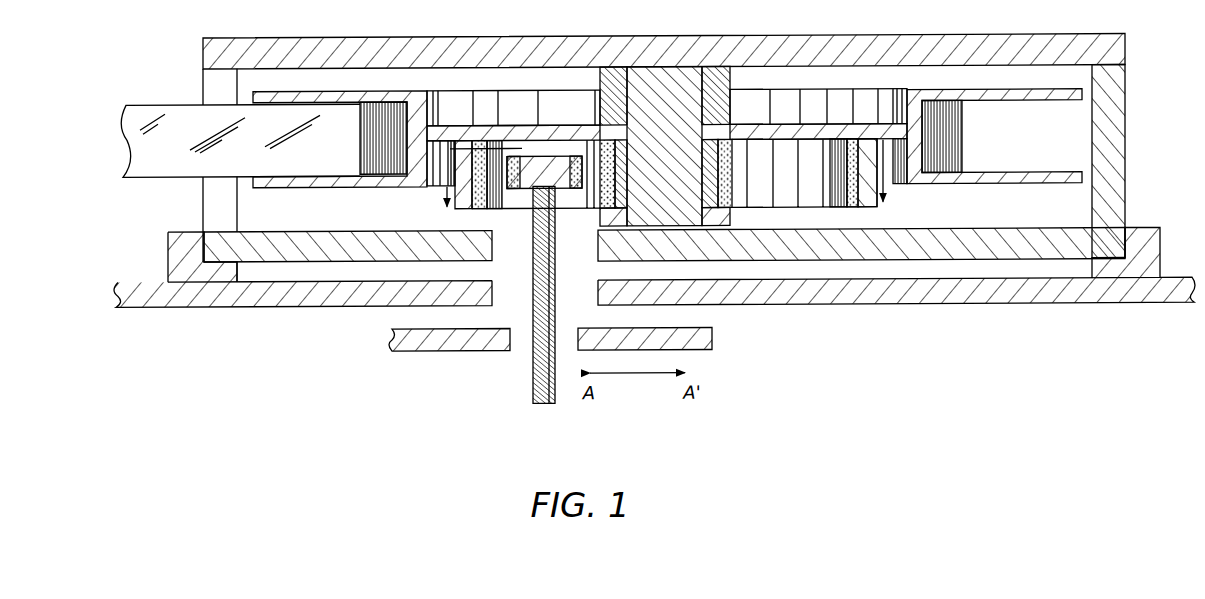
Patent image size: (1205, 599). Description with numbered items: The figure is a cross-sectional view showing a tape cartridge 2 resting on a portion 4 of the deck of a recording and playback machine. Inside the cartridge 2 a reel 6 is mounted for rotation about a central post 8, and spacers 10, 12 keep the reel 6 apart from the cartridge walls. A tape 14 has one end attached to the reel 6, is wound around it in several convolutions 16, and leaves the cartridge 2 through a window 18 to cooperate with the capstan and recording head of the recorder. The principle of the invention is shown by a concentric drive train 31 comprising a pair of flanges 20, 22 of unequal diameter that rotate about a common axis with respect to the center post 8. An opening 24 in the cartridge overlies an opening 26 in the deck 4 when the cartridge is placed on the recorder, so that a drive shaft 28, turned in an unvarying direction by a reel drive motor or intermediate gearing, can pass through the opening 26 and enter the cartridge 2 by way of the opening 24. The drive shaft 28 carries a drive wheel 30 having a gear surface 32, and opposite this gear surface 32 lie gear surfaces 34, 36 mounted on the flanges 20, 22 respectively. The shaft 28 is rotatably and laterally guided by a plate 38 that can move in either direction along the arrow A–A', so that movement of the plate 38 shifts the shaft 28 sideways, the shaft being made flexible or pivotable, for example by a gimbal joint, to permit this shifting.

The cartridge 2 is at (1127, 52).
The portion of the deck 4 is at (1080, 297).
The reel 6 is at (422, 113).
The central post 8 is at (708, 74).
The spacer 10 is at (603, 85).
The spacer 12 is at (723, 217).
The tape 14 is at (145, 162).
The convolutions 16 is at (379, 177).
The window 18 is at (208, 83).
The flange 20 is at (618, 148).
The flange 22 is at (457, 214).
The opening 24 is at (492, 257).
The opening 26 is at (490, 296).
The drive shaft 28 is at (560, 278).
The drive wheel 30 is at (563, 192).
The concentric drive train 31 is at (518, 120).
The gear surface 32 is at (515, 192).
The gear surface 34 is at (615, 183).
The gear surface 36 is at (479, 145).
The plate 38 is at (442, 350).